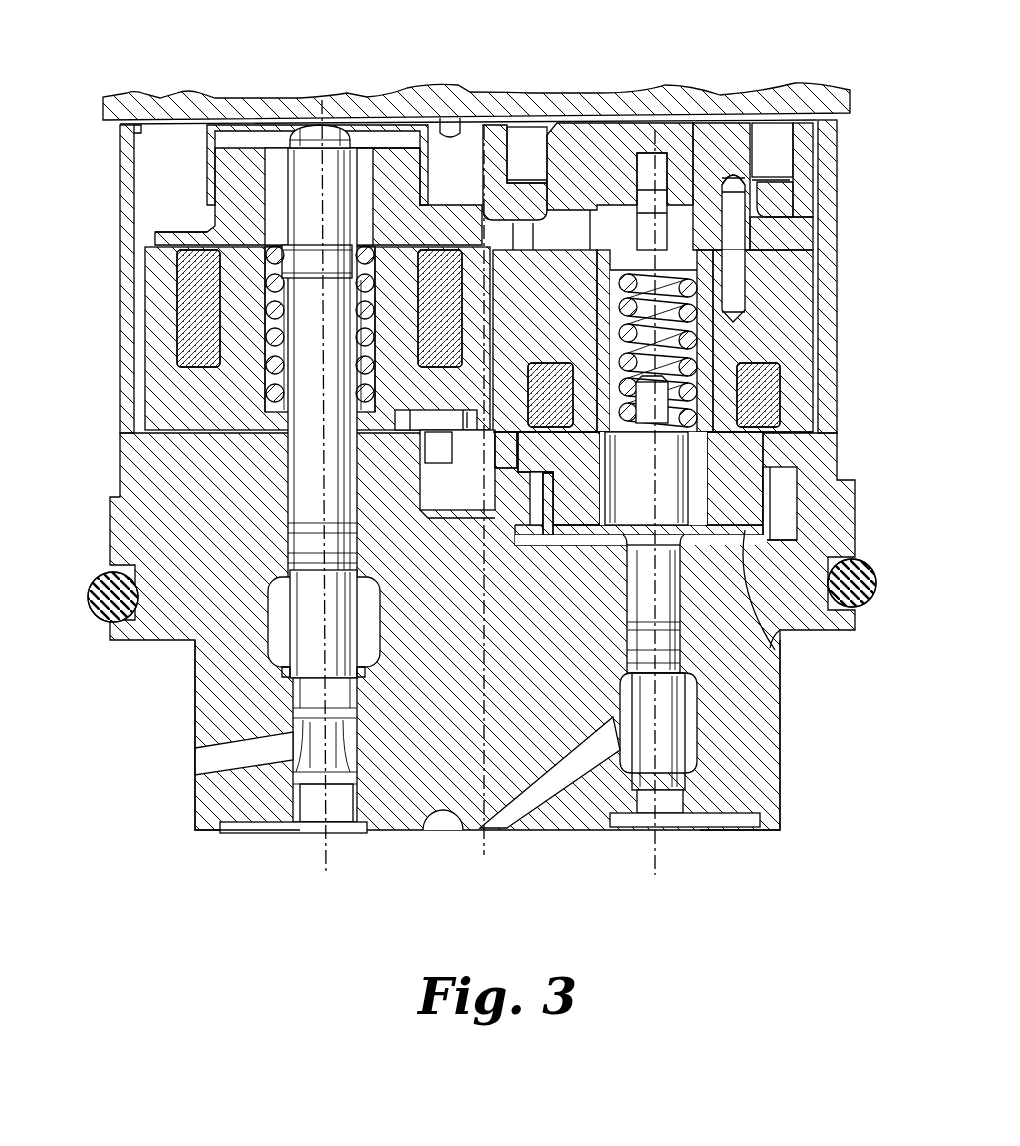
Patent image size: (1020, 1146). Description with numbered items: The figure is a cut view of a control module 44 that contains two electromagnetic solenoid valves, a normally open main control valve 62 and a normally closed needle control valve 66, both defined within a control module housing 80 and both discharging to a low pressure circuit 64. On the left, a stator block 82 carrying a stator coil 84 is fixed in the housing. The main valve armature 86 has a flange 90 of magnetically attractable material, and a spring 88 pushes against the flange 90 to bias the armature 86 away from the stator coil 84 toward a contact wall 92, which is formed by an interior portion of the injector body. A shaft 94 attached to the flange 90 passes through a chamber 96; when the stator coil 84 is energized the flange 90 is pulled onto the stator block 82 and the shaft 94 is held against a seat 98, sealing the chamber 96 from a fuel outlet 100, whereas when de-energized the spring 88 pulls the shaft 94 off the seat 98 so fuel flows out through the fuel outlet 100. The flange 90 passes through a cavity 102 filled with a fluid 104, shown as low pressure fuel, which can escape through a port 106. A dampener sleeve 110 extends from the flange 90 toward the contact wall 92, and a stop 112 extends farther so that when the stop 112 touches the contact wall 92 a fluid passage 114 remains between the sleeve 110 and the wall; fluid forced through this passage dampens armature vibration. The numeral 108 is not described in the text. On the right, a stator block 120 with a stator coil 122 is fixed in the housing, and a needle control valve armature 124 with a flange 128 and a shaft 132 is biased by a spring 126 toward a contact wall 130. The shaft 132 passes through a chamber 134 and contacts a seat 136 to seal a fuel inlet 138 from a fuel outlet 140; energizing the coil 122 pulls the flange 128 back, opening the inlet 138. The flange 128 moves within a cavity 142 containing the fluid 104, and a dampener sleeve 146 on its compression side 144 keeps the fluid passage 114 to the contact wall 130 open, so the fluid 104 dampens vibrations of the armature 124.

The control module 44 is at (206, 934).
The main control valve 62 is at (192, 801).
The low pressure circuit 64 is at (182, 768).
The needle control valve 66 is at (792, 776).
The control module housing 80 is at (193, 672).
The stator block 82 is at (158, 427).
The stator coil 84 is at (180, 343).
The armature 86 is at (272, 78).
The spring 88 is at (267, 393).
The flange 90 is at (165, 226).
The contact wall 92 is at (462, 112).
The shaft 94 is at (287, 480).
The chamber 96 is at (282, 618).
The seat 98 is at (295, 683).
The fuel outlet 100 is at (300, 728).
The cavity 102 is at (178, 201).
The fluid 104 is at (193, 169).
The port 106 is at (118, 130).
The top surface 108 is at (380, 137).
The dampener sleeve 110 is at (204, 186).
The stop 112 is at (321, 126).
The fluid passage 114 is at (200, 127).
The stator block 120 is at (775, 347).
The stator coil 122 is at (770, 389).
The needle control valve armature 124 is at (602, 568).
The spring 126 is at (700, 343).
The flange 128 is at (760, 449).
The contact wall 130 is at (700, 641).
The shaft 132 is at (704, 718).
The chamber 134 is at (698, 742).
The seat 136 is at (690, 792).
The fuel inlet 138 is at (520, 832).
The fuel outlet 140 is at (750, 841).
The cavity 142 is at (782, 510).
The compression side 144 is at (790, 632).
The dampener sleeve 146 is at (560, 572).